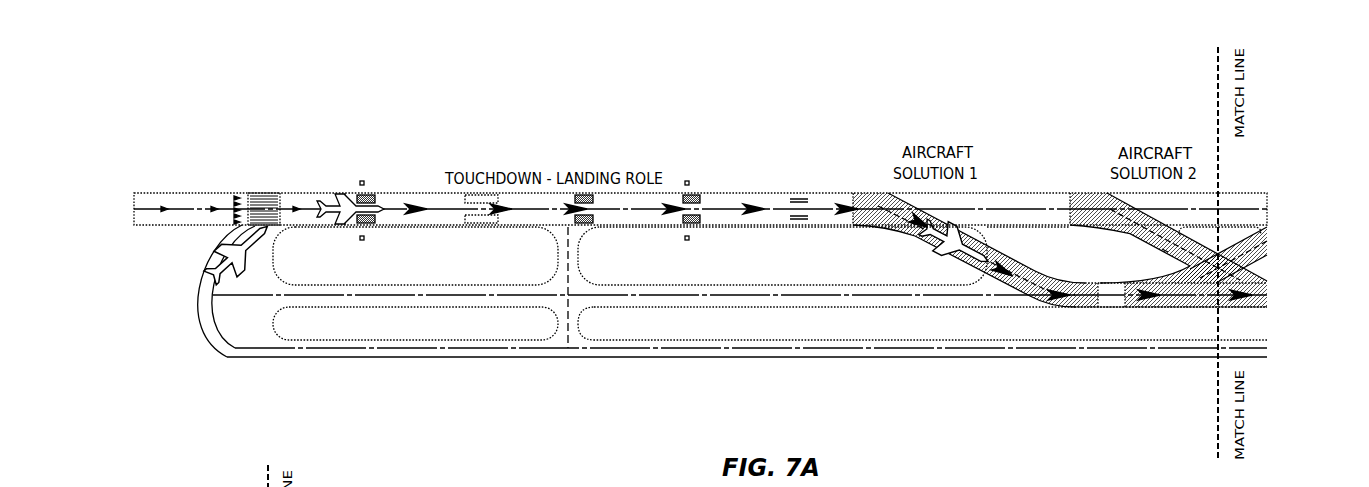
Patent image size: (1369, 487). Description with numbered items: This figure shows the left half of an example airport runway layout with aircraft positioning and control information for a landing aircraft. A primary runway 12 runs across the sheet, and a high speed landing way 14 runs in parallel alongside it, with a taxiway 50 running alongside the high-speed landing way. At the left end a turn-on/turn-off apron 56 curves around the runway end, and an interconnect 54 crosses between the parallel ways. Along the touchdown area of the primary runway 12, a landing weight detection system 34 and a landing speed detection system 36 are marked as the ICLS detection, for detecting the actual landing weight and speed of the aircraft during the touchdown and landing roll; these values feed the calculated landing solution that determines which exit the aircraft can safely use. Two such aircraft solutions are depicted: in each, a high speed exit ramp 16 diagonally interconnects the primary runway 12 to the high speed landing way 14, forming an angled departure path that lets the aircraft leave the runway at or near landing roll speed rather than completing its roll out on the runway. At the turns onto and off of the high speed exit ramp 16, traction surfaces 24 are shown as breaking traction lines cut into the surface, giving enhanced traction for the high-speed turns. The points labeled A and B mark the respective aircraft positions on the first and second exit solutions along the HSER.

The primary runway 12 is at (787, 192).
The high speed landing way 14 is at (430, 284).
The high speed exit ramp 16 is at (988, 252).
The traction surfaces 24 is at (872, 197).
The landing weight detection system 34 is at (475, 192).
The landing speed detection system 36 is at (715, 164).
The taxiway 50 is at (432, 358).
The interconnects 54 is at (560, 247).
The turn-on/turn-off aprons 56 is at (230, 323).
The position A is at (878, 253).
The position B is at (1165, 250).